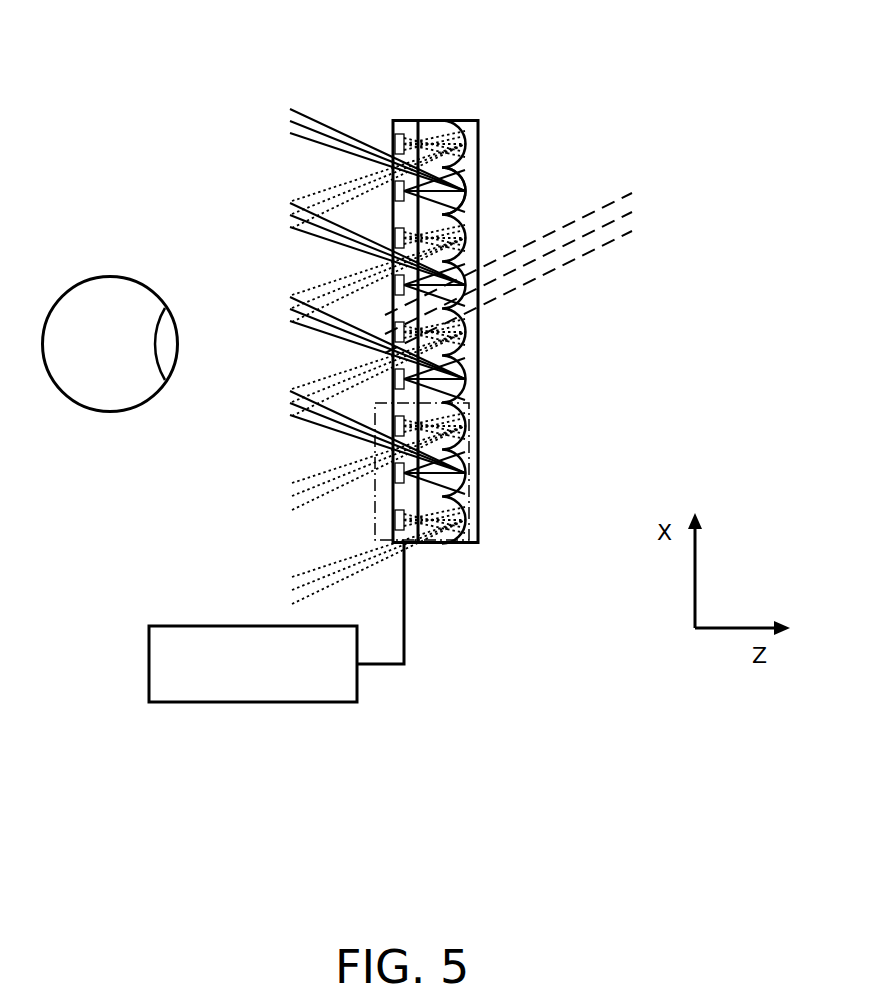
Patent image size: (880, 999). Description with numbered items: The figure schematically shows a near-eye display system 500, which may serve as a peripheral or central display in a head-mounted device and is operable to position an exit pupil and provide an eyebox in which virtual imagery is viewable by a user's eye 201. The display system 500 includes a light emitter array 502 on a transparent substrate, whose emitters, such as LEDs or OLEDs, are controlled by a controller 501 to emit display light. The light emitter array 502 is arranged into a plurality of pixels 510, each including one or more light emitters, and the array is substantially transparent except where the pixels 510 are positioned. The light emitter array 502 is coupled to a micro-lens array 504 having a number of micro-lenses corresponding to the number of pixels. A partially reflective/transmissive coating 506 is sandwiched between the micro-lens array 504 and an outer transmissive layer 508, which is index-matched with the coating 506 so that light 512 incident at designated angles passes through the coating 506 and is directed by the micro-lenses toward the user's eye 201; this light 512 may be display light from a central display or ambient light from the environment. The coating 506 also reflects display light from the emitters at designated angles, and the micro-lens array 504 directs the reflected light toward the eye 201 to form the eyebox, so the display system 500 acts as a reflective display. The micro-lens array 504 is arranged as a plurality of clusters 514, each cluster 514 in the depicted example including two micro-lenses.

The near-eye display system 500 is at (626, 68).
The controller 501 is at (276, 622).
The light emitter array 502 is at (404, 121).
The micro-lens array 504 is at (432, 120).
The partially reflective/transmissive coating 506 is at (465, 190).
The outer transmissive layer 508 is at (478, 508).
The pixel 510 is at (394, 519).
The light 512 is at (637, 211).
The cluster of micro-lenses 514 is at (470, 462).
The user's eye 201 is at (103, 412).